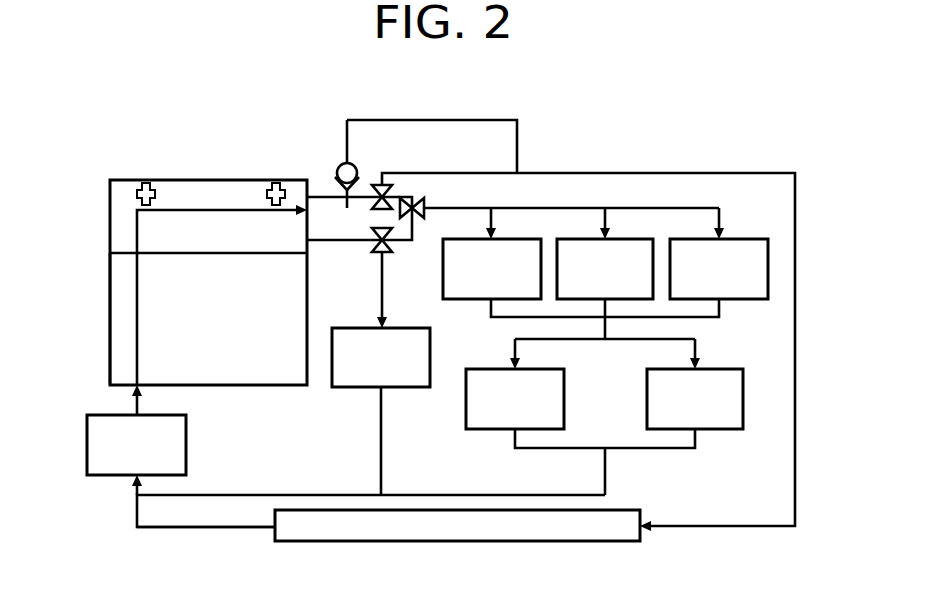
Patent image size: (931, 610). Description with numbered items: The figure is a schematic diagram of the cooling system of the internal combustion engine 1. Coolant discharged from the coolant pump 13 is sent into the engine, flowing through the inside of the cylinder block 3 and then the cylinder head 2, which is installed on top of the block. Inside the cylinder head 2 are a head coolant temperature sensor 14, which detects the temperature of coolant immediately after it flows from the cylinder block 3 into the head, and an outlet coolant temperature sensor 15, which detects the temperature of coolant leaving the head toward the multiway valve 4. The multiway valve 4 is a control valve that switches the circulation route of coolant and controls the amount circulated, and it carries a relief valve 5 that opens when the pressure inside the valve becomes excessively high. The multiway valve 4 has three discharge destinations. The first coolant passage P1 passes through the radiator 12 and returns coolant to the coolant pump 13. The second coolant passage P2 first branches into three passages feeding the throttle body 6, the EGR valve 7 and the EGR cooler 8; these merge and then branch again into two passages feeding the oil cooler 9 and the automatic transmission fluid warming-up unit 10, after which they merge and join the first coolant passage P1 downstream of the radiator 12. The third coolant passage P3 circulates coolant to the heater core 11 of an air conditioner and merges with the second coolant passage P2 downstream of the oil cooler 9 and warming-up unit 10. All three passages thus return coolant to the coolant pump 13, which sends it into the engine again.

The internal combustion engine 1 is at (97, 203).
The cylinder head 2 is at (110, 240).
The cylinder block 3 is at (110, 340).
The multiway valve 4 is at (364, 195).
The relief valve 5 is at (332, 149).
The throttle body 6 is at (511, 239).
The EGR valve 7 is at (623, 239).
The EGR cooler 8 is at (737, 239).
The oil cooler 9 is at (535, 369).
The automatic transmission fluid warming-up unit 10 is at (715, 369).
The heater core 11 is at (352, 326).
The radiator 12 is at (480, 544).
The coolant pump 13 is at (187, 437).
The head coolant temperature sensor 14 is at (148, 181).
The outlet coolant temperature sensor 15 is at (278, 181).
The first coolant passage P1 is at (203, 528).
The second coolant passage P2 is at (607, 470).
The third coolant passage P3 is at (383, 450).